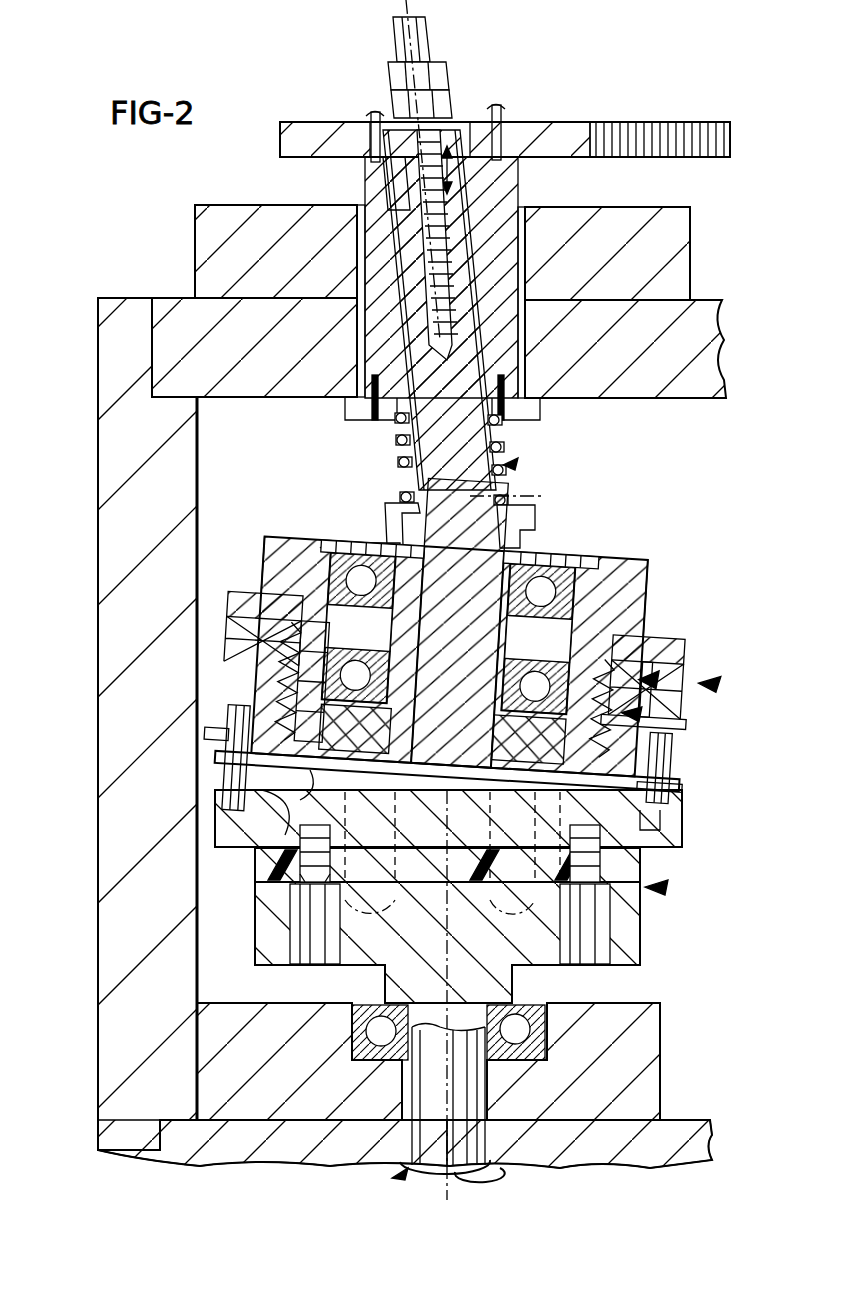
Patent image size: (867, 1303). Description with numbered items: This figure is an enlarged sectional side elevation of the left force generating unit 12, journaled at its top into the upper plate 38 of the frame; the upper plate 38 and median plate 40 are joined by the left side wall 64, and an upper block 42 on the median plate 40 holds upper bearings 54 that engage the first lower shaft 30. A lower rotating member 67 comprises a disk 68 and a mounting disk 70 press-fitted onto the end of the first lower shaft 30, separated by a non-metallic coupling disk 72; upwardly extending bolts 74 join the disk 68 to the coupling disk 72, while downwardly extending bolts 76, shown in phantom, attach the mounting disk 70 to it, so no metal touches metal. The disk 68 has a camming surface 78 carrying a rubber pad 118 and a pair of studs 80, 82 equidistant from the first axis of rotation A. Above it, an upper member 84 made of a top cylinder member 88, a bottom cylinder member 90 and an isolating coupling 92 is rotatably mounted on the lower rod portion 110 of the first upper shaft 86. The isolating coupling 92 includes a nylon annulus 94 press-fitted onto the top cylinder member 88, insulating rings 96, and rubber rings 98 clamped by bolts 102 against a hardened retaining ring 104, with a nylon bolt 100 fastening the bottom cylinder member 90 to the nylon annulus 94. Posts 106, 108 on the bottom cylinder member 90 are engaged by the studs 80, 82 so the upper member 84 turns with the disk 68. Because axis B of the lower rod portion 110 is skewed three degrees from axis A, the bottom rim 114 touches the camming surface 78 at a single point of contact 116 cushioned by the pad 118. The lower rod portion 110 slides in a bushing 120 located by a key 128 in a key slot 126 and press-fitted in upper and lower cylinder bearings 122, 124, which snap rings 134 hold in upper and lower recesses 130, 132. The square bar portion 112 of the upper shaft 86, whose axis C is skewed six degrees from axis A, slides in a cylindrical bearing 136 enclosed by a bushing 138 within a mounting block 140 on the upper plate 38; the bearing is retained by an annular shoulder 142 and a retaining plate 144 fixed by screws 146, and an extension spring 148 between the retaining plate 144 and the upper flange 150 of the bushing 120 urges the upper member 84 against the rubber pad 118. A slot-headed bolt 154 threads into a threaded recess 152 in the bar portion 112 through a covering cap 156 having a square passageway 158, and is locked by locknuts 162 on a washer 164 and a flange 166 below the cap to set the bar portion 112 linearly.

The left force generating unit 12 is at (718, 668).
The first lower shaft 30 is at (412, 1098).
The upper plate 38 is at (672, 388).
The median plate 40 is at (672, 1122).
The upper block 42 is at (630, 1005).
The upper bearings 54 is at (365, 1008).
The left side wall 64 is at (98, 965).
The lower rotating member 67 is at (665, 888).
The disk 68 is at (683, 820).
The mounting disk 70 is at (642, 922).
The coupling disk 72 is at (642, 860).
The upwardly extending bolts 74 is at (460, 830).
The downwardly extending bolts 76 is at (452, 853).
The camming surface 78 is at (688, 772).
The stud 80 is at (232, 778).
The stud 82 is at (678, 742).
The upper member 84 is at (645, 702).
The first upper shaft 86 is at (520, 463).
The top cylinder member 88 is at (630, 556).
The bottom cylinder member 90 is at (300, 710).
The isolating coupling 92 is at (660, 665).
The nylon annulus 94 is at (255, 610).
The insulating rings 96 is at (330, 680).
The rubber rings 98 is at (686, 684).
The nylon bolt 100 is at (290, 640).
The bolts 102 is at (652, 655).
The hardened retaining ring 104 is at (692, 712).
The post 106 is at (212, 752).
The post 108 is at (685, 770).
The lower rod portion 110 is at (500, 536).
The bar portion 112 is at (470, 365).
The bottom rim 114 is at (287, 802).
The point of contact 116 is at (650, 832).
The rubber pad 118 is at (240, 848).
The bushing 120 is at (505, 553).
The upper cylinder bearing 122 is at (555, 590).
The lower cylinder bearing 124 is at (560, 665).
The key slot 126 is at (390, 515).
The key 128 is at (380, 542).
The upper recess 130 is at (318, 545).
The lower recess 132 is at (335, 660).
The snap rings 134 is at (575, 552).
The cylindrical bearing 136 is at (510, 188).
The bushing 138 is at (524, 280).
The mounting block 140 is at (680, 236).
The annular shoulder 142 is at (345, 210).
The retaining plate 144 is at (542, 412).
The screws 146 is at (372, 420).
The extension spring 148 is at (396, 463).
The upper flange 150 is at (536, 508).
The threaded recess 152 is at (445, 325).
The slot-headed bolt 154 is at (418, 40).
The covering cap 156 is at (500, 106).
The square passageway 158 is at (392, 185).
The locknuts 162 is at (446, 72).
The washer 164 is at (450, 100).
The flange 166 is at (458, 166).
The first axis of rotation A is at (480, 990).
The axis of lower rod portion B is at (540, 495).
The axis of bar portion C is at (405, 15).